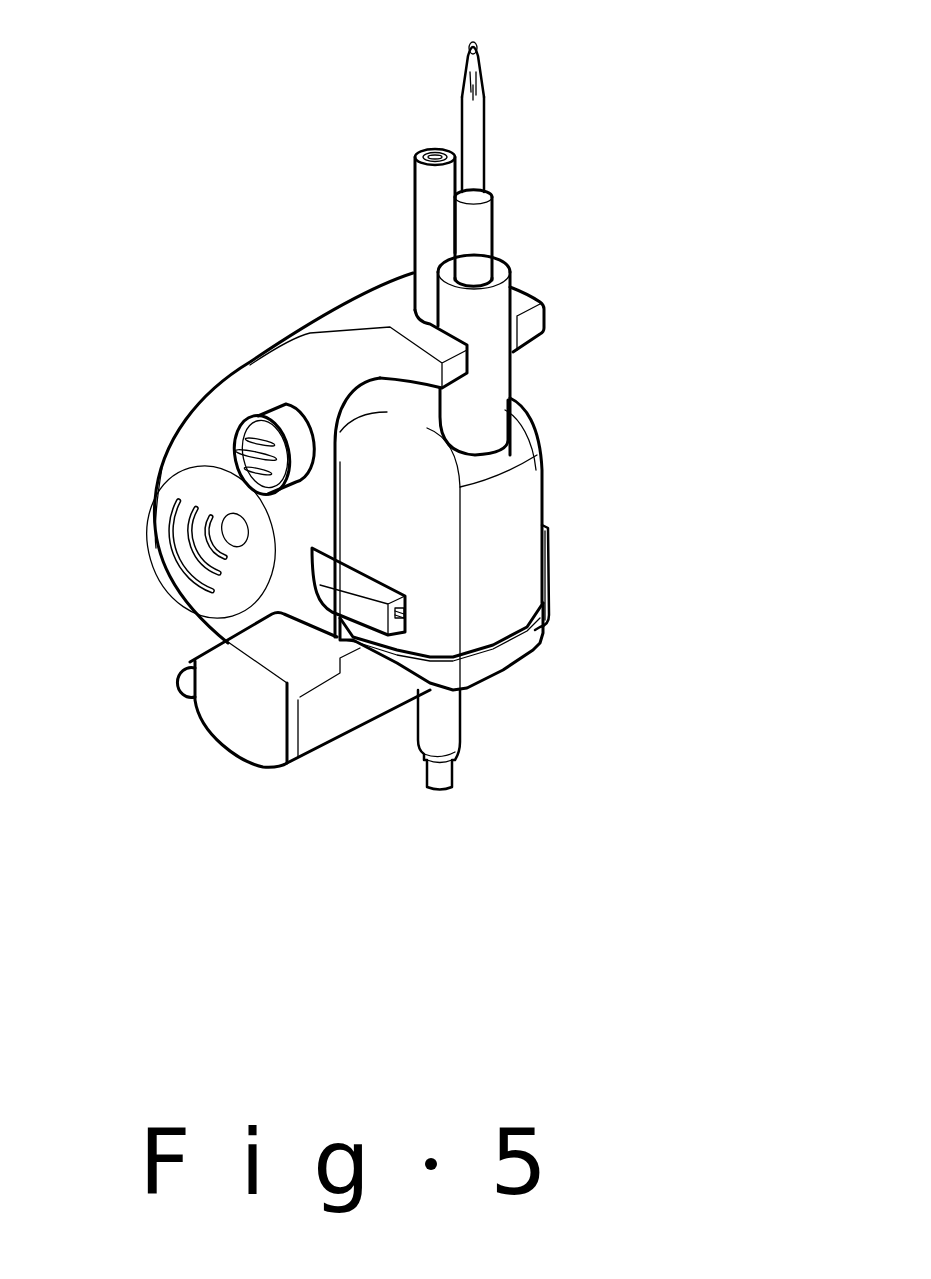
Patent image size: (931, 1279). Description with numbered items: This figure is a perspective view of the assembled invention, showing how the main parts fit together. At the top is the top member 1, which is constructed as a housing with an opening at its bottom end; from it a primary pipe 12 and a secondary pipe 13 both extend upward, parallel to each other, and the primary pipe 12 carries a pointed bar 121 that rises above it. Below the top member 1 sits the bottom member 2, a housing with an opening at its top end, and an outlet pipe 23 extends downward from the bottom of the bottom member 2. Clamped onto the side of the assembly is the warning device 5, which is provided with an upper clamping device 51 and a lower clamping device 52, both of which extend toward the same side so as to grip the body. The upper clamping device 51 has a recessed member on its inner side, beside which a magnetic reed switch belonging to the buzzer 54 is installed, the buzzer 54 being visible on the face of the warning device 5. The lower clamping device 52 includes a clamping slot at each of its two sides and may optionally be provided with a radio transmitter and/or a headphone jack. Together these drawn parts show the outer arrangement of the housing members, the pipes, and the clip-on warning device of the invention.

The top member 1 is at (502, 518).
The bottom member 2 is at (548, 660).
The warning device 5 is at (240, 347).
The primary pipe 12 is at (482, 313).
The secondary pipe 13 is at (435, 212).
The outlet pipe 23 is at (442, 712).
The upper clamping device 51 is at (563, 310).
The lower clamping device 52 is at (370, 610).
The buzzer 54 is at (243, 420).
The pointed bar 121 is at (478, 143).